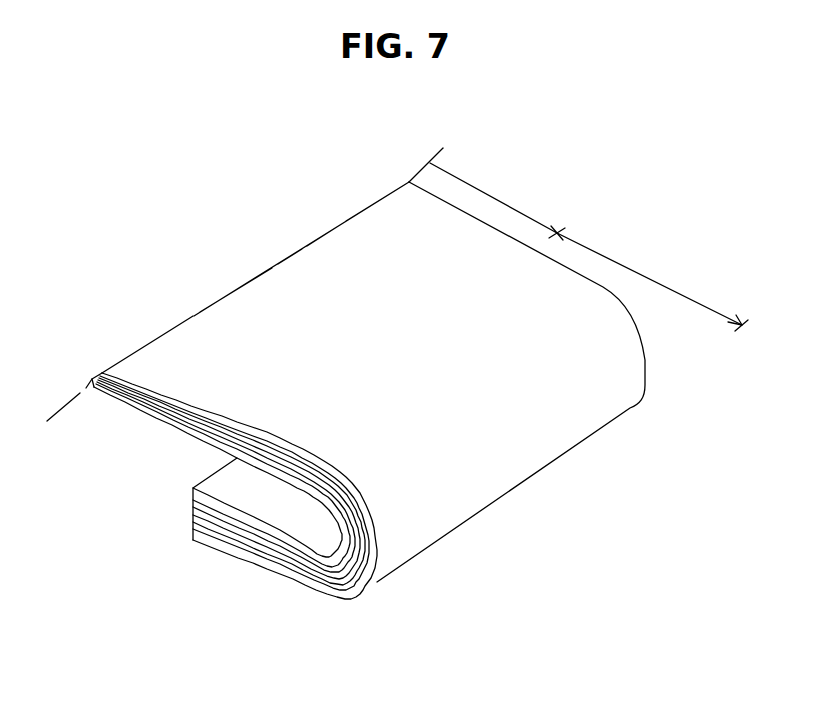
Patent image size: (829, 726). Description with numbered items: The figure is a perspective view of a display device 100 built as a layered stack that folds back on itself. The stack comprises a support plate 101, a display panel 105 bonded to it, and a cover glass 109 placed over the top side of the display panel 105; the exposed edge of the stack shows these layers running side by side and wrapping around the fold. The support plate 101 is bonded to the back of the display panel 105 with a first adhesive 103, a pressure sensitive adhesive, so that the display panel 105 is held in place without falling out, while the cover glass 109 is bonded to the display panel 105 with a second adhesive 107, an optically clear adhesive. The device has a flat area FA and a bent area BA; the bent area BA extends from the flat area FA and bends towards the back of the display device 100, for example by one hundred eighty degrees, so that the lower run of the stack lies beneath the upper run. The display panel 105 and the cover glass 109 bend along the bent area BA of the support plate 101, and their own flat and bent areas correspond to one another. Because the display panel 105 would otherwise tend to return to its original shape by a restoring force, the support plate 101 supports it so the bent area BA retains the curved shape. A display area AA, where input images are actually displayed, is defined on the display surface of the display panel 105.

The display device 100 is at (397, 395).
The support plate 101 is at (197, 527).
The first adhesive 103 is at (362, 555).
The display panel 105 is at (243, 537).
The second adhesive 107 is at (355, 592).
The cover glass 109 is at (282, 576).
The display area AA is at (537, 442).
The flat area FA is at (497, 201).
The bent area BA is at (652, 282).